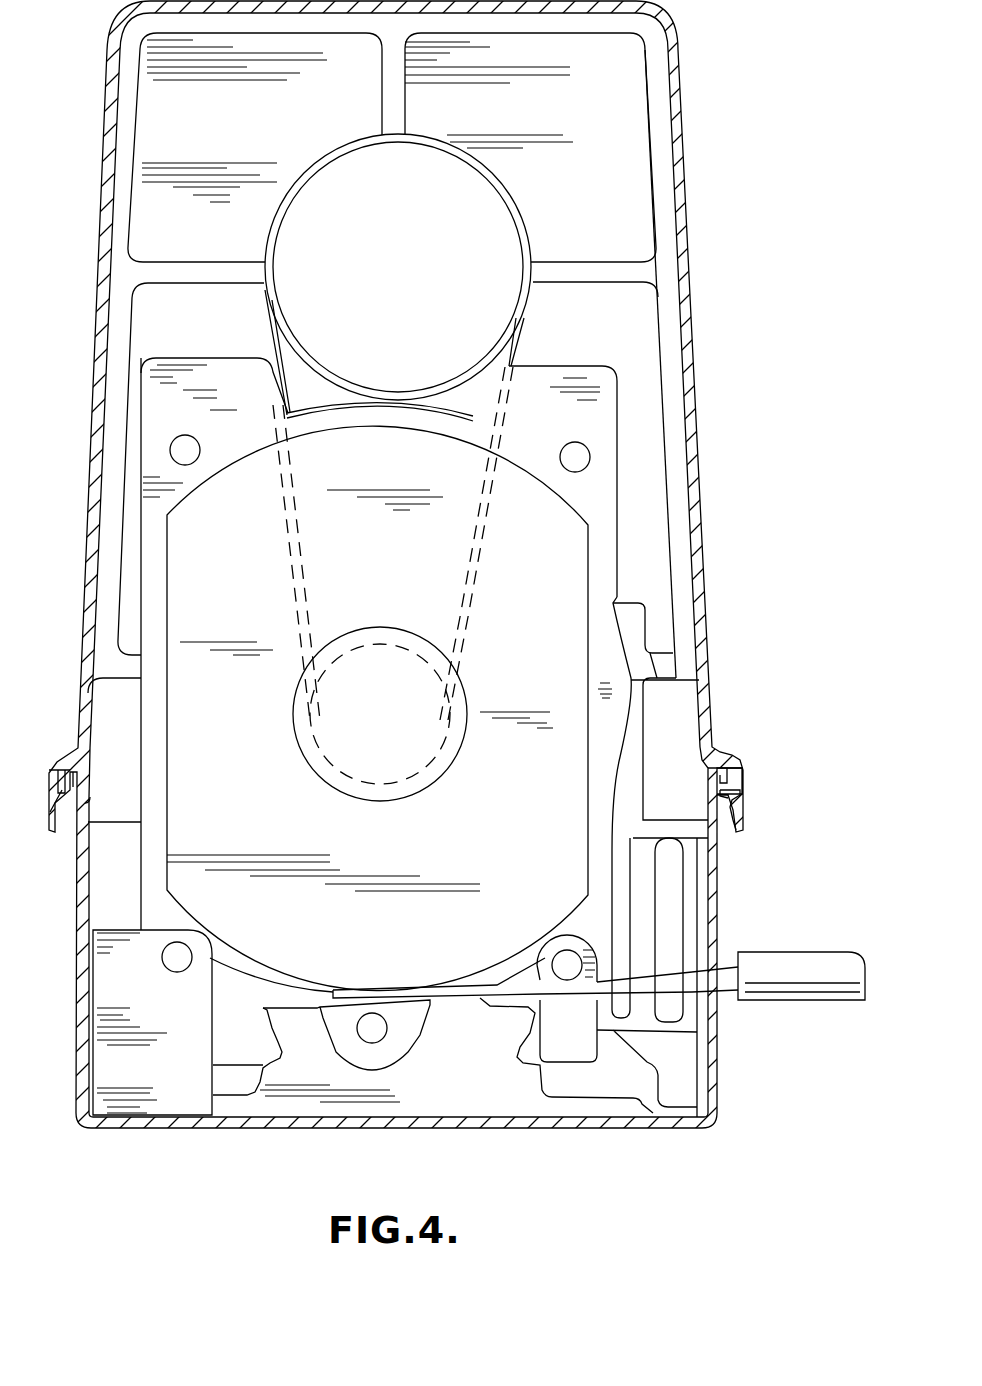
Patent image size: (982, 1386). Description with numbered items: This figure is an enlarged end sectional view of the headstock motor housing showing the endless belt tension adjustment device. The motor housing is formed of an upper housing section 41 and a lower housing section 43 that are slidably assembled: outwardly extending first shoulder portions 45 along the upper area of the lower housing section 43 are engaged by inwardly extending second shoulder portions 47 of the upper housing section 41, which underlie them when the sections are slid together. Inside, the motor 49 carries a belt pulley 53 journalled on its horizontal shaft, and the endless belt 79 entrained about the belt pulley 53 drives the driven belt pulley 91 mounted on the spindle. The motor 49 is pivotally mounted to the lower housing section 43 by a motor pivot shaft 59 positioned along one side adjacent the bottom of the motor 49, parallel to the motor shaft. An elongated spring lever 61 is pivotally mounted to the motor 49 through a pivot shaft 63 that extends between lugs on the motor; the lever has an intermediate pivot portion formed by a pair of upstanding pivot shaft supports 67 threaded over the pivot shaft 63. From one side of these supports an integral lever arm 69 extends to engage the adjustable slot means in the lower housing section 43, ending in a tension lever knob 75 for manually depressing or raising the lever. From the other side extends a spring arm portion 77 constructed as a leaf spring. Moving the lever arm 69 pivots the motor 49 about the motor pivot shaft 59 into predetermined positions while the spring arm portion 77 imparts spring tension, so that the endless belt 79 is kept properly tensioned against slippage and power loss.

The upper housing section 41 is at (700, 628).
The lower housing section 43 is at (712, 883).
The first shoulder portions 45 is at (723, 770).
The second shoulder portions 47 is at (732, 796).
The motor 49 is at (545, 588).
The belt pulley 53 is at (385, 710).
The motor pivot shaft 59 is at (170, 960).
The elongated spring lever 61 is at (728, 956).
The pivot shaft 63 is at (565, 967).
The pivot shaft supports 67 is at (543, 960).
The lever arm 69 is at (692, 982).
The tension lever knob 75 is at (800, 983).
The spring arm portion 77 is at (417, 1052).
The endless belt 79 is at (513, 393).
The driven belt pulley 91 is at (462, 240).